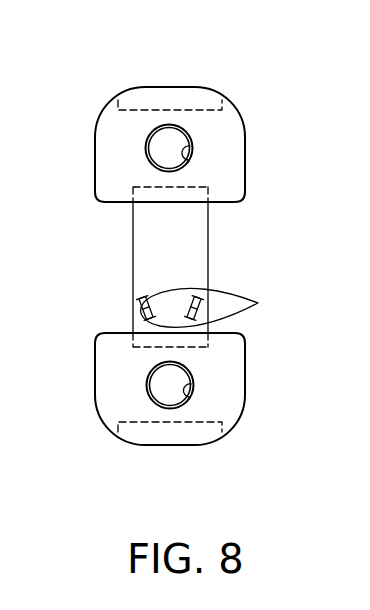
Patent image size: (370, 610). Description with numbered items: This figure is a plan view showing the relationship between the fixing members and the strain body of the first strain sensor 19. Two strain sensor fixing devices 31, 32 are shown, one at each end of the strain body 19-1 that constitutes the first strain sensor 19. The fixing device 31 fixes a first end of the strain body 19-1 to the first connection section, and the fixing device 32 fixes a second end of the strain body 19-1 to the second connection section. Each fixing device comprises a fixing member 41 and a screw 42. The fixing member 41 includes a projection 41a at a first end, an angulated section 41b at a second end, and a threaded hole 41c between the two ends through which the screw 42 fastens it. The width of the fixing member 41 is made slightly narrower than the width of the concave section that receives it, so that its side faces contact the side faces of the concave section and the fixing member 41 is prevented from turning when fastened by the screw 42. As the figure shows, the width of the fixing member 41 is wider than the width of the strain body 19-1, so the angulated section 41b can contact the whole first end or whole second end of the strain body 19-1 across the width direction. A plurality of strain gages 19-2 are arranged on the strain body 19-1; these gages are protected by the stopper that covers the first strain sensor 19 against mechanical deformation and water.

The strain sensor fixing device 31 is at (210, 83).
The strain sensor fixing device 32 is at (213, 457).
The fixing member 41 is at (196, 268).
The projection 41a is at (130, 110).
The angulated section 41b is at (153, 202).
The threaded hole 41c is at (188, 160).
The screw 42 is at (162, 152).
The first strain sensor 19 is at (241, 285).
The strain body 19-1 is at (193, 260).
The strain gages 19-2 is at (200, 302).